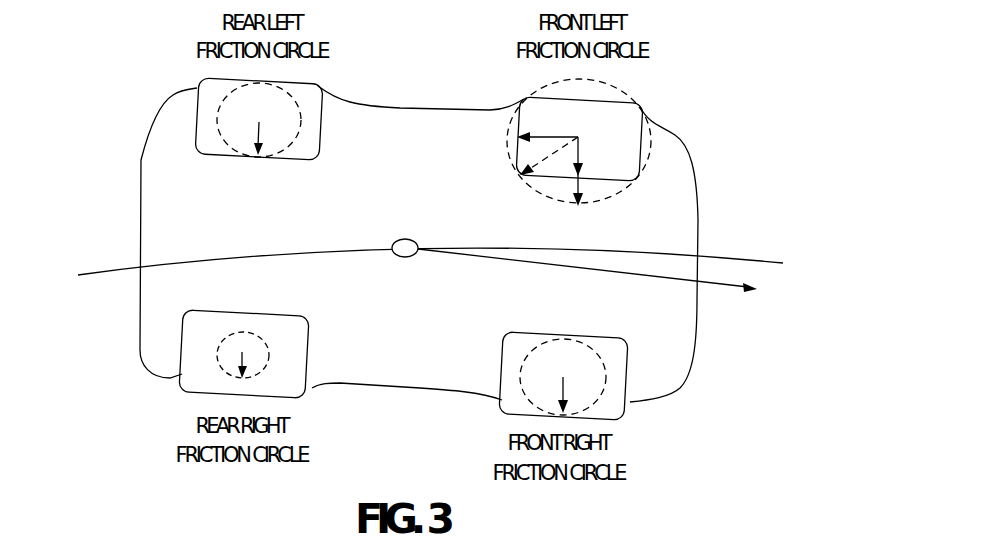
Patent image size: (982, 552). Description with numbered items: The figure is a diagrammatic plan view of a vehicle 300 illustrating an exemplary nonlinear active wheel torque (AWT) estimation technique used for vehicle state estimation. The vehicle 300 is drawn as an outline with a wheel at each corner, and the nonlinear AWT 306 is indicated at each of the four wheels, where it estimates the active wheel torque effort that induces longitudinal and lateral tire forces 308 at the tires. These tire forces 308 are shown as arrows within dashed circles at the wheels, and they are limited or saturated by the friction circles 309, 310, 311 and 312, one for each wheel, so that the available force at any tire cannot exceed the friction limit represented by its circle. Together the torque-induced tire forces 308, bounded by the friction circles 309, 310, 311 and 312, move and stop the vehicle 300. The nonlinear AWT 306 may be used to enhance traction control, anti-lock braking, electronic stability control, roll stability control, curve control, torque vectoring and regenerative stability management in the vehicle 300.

The vehicle 300 is at (409, 228).
The nonlinear AWT 306 is at (259, 121).
The longitudinal and lateral tire forces 308 is at (355, 252).
The friction circle 309 is at (527, 99).
The friction circle 310 is at (259, 121).
The friction circle 311 is at (563, 377).
The friction circle 312 is at (243, 355).